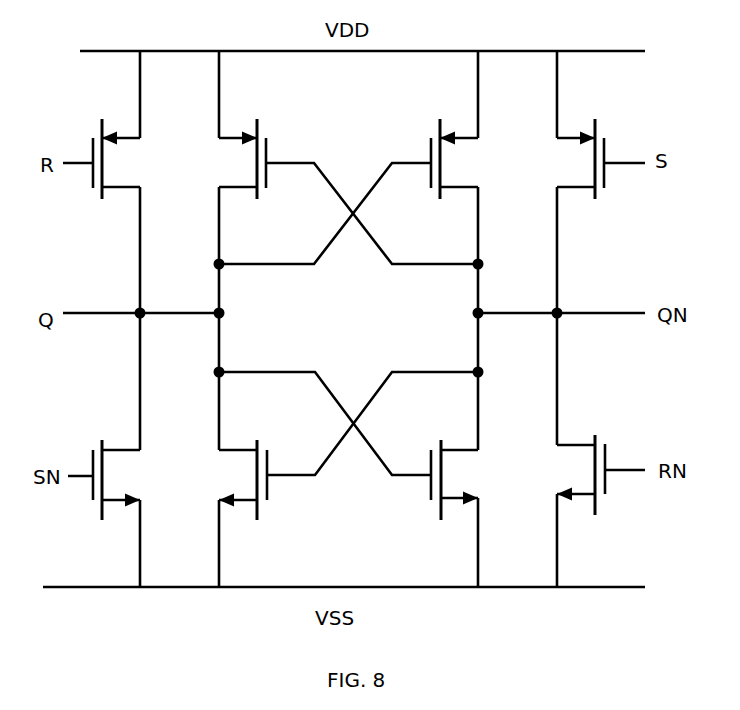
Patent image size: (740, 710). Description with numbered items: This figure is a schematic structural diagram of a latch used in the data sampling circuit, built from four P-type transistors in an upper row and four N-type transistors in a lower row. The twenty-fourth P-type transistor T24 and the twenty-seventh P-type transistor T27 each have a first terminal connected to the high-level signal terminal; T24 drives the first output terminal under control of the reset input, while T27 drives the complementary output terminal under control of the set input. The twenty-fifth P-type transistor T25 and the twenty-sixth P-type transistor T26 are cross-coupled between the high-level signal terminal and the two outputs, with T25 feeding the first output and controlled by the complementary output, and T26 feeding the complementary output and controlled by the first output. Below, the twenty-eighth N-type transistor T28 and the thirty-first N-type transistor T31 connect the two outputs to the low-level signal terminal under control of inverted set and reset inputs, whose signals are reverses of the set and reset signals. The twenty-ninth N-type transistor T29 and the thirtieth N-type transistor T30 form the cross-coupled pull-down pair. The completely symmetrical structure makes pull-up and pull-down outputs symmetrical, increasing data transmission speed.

The twenty-fourth P-type transistor T24 is at (112, 159).
The twenty-fifth P-type transistor T25 is at (235, 159).
The twenty-sixth P-type transistor T26 is at (461, 159).
The twenty-seventh P-type transistor T27 is at (592, 159).
The twenty-eighth N-type transistor T28 is at (114, 480).
The twenty-ninth N-type transistor T29 is at (234, 480).
The thirtieth N-type transistor T30 is at (461, 480).
The thirty-first N-type transistor T31 is at (590, 475).